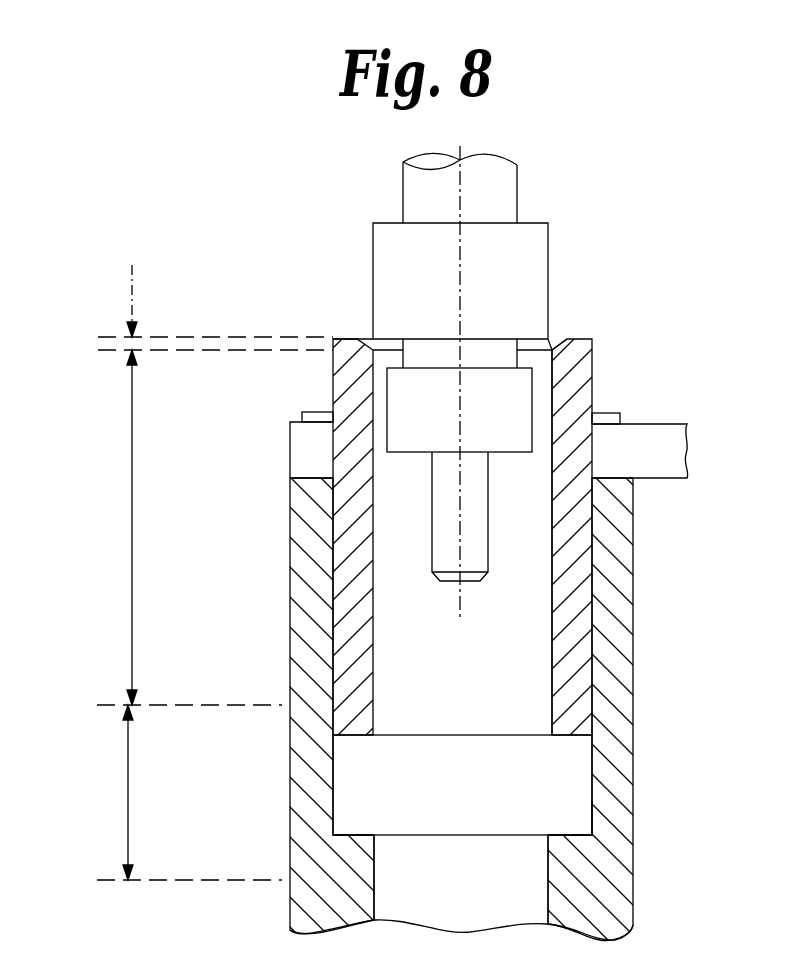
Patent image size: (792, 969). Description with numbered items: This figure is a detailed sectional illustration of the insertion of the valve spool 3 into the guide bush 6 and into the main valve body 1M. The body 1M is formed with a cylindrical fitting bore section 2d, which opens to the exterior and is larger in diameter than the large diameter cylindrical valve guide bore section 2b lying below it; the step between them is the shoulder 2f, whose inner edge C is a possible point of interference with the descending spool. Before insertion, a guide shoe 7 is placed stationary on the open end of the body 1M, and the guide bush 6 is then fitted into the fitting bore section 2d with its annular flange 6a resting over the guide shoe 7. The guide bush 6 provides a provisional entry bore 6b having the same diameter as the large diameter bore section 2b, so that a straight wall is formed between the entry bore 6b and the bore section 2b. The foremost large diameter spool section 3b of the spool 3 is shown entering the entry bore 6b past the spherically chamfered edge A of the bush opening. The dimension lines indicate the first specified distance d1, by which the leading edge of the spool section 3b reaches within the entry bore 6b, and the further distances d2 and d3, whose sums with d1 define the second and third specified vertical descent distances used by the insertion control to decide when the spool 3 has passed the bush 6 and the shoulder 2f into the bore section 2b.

The valve spool 3 is at (332, 269).
The foremost large diameter spool section 3b is at (548, 222).
The spherically chamfered edge A is at (553, 337).
The guide bush 6 is at (592, 366).
The annular flange 6a is at (312, 412).
The entry bore 6b is at (552, 655).
The guide shoe 7 is at (660, 425).
The machine body 1M is at (634, 549).
The fitting bore section 2d is at (333, 752).
The shoulder 2f is at (358, 833).
The inner edge of the shoulder C is at (546, 834).
The large diameter cylindrical valve guide bore section 2b is at (548, 890).
The first specified distance d1 is at (98, 341).
The second specified distance increment d2 is at (132, 549).
The third specified distance increment d3 is at (127, 758).